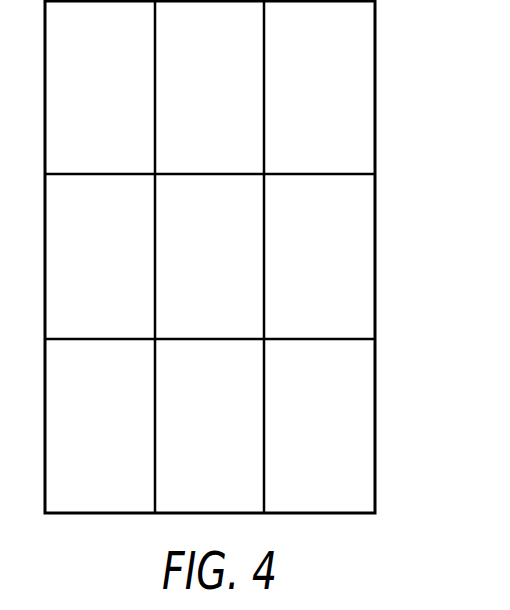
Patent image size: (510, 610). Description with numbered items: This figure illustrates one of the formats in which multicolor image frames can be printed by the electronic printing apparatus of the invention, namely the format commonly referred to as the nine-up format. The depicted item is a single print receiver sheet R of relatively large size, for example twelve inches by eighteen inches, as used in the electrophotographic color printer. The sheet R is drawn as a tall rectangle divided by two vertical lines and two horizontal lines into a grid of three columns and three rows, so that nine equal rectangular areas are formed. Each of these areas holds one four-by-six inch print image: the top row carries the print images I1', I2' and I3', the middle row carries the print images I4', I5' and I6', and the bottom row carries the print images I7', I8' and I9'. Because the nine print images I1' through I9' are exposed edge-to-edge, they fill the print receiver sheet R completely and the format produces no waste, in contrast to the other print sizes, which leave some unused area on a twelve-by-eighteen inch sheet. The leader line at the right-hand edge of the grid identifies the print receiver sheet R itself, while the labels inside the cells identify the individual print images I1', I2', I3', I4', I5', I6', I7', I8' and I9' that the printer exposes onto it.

The print receiver sheet R is at (375, 123).
The print image I1' is at (103, 87).
The print image I2' is at (216, 88).
The print image I3' is at (321, 88).
The print image I4' is at (101, 255).
The print image I5' is at (215, 255).
The print image I6' is at (319, 255).
The print image I7' is at (104, 425).
The print image I8' is at (213, 425).
The print image I9' is at (319, 425).